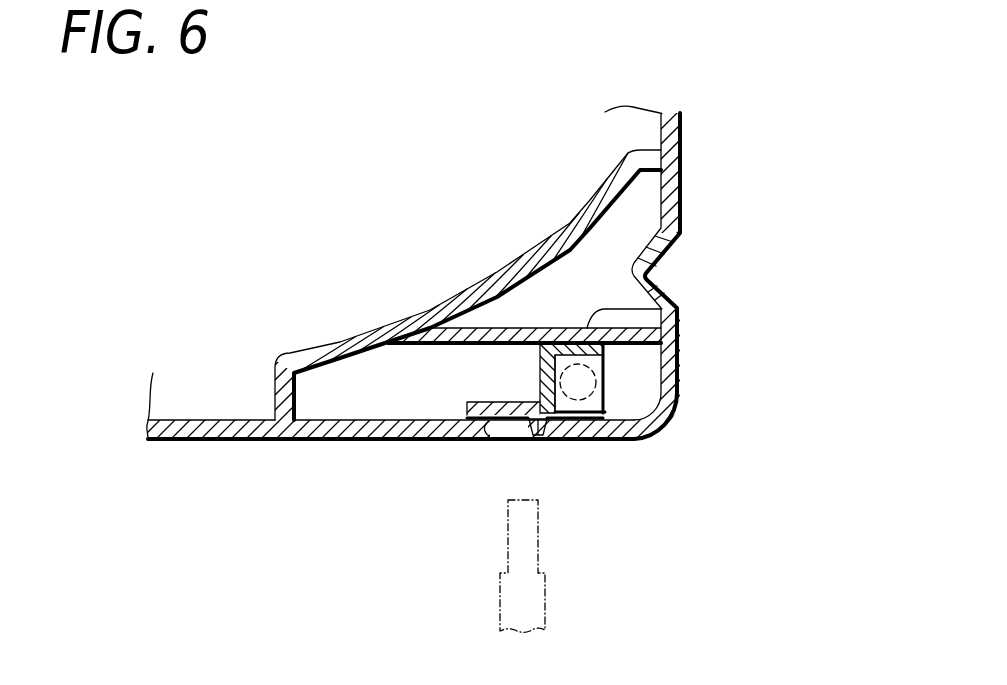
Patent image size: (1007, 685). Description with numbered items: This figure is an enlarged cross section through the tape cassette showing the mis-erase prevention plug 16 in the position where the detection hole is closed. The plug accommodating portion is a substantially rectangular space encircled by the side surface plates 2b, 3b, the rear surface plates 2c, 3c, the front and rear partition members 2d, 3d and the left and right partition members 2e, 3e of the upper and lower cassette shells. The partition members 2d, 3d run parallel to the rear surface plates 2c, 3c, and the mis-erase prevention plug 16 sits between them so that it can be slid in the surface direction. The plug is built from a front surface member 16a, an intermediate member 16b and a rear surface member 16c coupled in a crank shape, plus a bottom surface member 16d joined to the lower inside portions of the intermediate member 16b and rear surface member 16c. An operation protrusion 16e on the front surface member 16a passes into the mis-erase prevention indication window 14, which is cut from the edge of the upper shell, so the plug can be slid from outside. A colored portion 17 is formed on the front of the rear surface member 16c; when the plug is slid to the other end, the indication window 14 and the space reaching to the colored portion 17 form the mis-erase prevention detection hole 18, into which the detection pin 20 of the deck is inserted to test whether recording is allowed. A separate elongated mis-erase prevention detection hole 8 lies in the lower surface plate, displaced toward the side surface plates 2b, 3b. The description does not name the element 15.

The side surface plate 2b is at (568, 275).
The side surface plate 3b is at (683, 193).
The rear surface plate 2c is at (568, 303).
The rear surface plate 3c is at (345, 440).
The front and rear partition member 2d is at (568, 275).
The front and rear partition member 3d is at (678, 308).
The left and right partition member 2e is at (568, 275).
The left and right partition member 3e is at (273, 392).
The mis-erase prevention detection hole 8 is at (613, 388).
The mis-erase prevention indication window 14 is at (466, 408).
The space 15 is at (632, 373).
The mis-erase prevention plug 16 is at (554, 391).
The front surface member 16a is at (493, 442).
The intermediate member 16b is at (540, 357).
The rear surface member 16c is at (604, 353).
The bottom surface member 16d is at (633, 375).
The operation protrusion 16e is at (537, 442).
The colored portion 17 is at (572, 370).
The mis-erase prevention detection hole 18 is at (512, 443).
The detection pin 20 is at (500, 615).